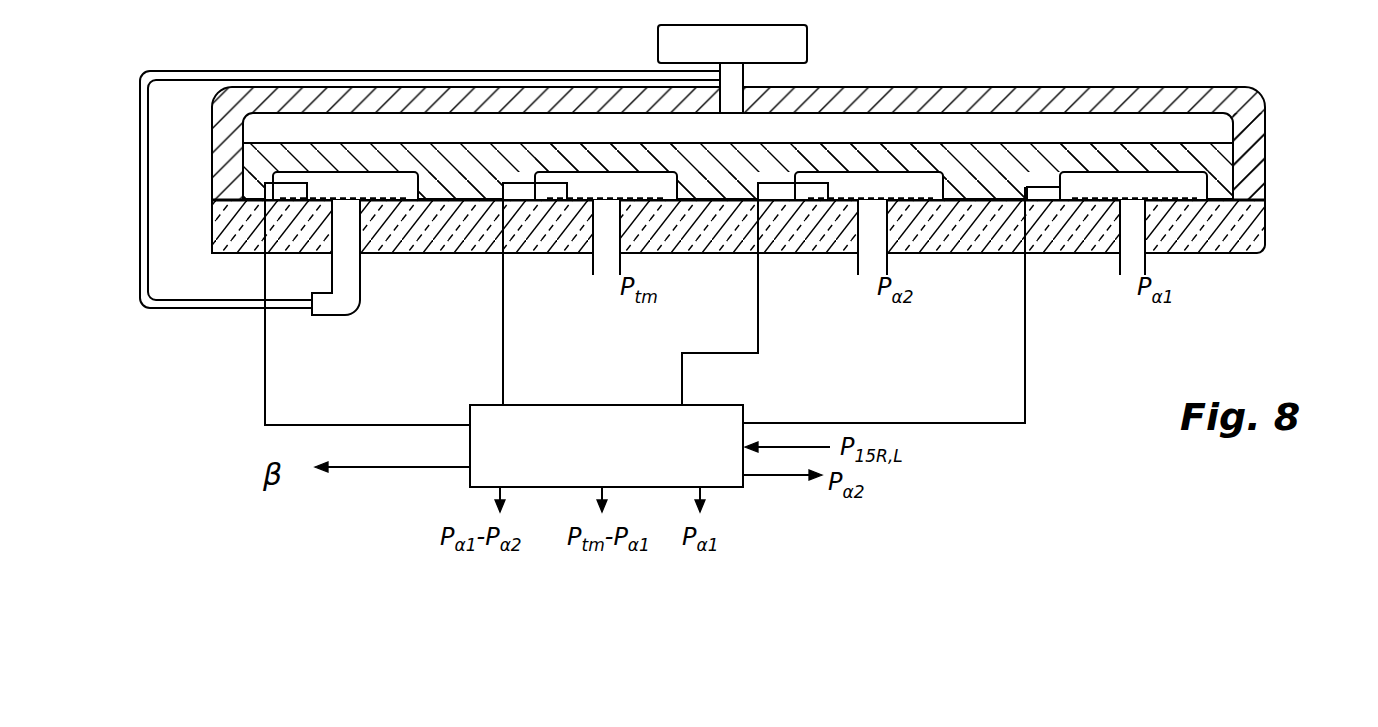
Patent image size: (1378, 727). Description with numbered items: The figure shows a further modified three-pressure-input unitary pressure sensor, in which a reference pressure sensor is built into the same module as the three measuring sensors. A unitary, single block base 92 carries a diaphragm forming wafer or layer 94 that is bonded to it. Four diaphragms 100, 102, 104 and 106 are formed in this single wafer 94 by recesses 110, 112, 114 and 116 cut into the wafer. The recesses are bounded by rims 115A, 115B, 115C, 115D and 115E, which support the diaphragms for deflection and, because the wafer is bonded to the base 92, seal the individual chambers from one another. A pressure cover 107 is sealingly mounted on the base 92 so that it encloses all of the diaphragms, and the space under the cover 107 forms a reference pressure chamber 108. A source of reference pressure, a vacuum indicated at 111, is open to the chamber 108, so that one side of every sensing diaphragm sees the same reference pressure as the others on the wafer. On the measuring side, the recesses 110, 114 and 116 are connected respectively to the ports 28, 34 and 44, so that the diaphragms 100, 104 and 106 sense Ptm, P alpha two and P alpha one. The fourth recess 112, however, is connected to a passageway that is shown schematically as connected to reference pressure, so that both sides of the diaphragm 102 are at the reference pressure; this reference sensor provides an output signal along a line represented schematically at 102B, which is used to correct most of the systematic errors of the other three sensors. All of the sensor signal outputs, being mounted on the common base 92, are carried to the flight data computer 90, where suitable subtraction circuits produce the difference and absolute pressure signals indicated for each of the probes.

The pressure cover 107 is at (290, 97).
The reference pressure chamber 108 is at (1143, 130).
The diaphragm forming wafer 94 is at (1235, 140).
The unitary single block base 92 is at (727, 253).
The diaphragm 102 is at (322, 163).
The output signal line 102B is at (263, 363).
The recess 110 is at (568, 192).
The recess 114 is at (907, 187).
The recess 116 is at (1130, 183).
The diaphragm 100 is at (590, 148).
The diaphragm 104 is at (866, 168).
The diaphragm 106 is at (1118, 168).
The rim 115A is at (1223, 180).
The rim 115B is at (978, 203).
The rim 115C is at (730, 183).
The rim 115D is at (457, 192).
The rim 115E is at (232, 178).
The source of reference pressure 111 is at (730, 22).
The recess 112 is at (378, 185).
The port 28 is at (617, 277).
The port 34 is at (877, 277).
The port 44 is at (1133, 280).
The flight data computer 90 is at (643, 492).